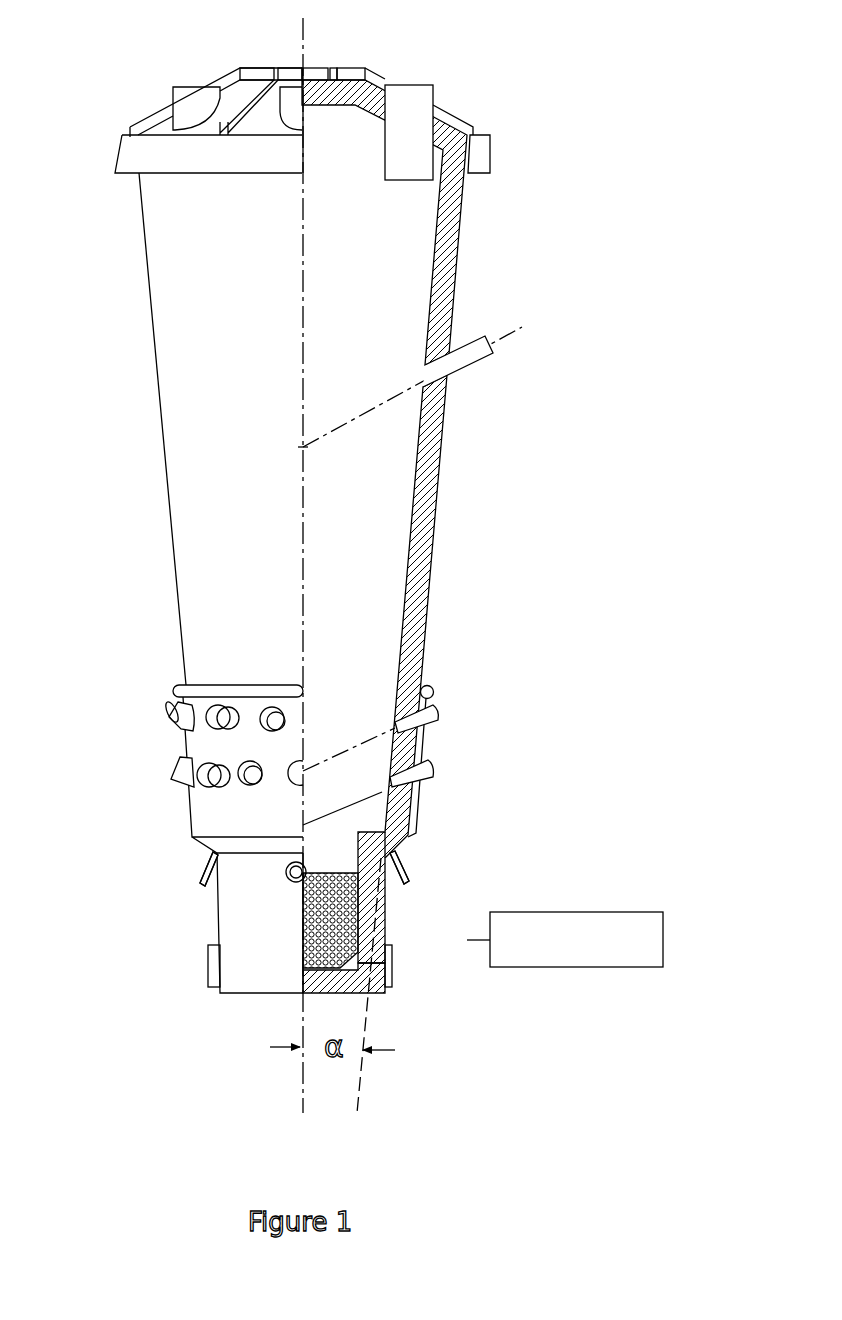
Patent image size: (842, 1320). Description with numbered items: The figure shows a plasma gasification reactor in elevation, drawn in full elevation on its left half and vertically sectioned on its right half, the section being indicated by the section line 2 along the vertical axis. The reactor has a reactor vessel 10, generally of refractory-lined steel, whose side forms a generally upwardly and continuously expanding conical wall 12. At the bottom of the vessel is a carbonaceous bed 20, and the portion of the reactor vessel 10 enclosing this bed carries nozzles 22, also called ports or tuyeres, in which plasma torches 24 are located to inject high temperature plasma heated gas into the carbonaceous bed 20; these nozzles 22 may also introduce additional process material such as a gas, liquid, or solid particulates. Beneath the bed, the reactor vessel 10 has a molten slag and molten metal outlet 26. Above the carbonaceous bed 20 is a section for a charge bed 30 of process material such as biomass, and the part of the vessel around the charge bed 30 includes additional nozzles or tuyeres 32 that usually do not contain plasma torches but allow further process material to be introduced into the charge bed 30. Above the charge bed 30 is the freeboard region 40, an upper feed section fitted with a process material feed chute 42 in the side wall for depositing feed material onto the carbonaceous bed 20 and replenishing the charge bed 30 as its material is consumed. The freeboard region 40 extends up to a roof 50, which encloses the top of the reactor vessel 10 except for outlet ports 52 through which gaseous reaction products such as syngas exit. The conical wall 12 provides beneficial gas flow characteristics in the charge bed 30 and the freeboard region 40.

The section line 2- 2 is at (298, 414).
The reactor vessel 10 is at (200, 324).
The conical wall 12 is at (453, 302).
The carbonaceous bed 20 is at (385, 928).
The nozzles 22 is at (198, 880).
The plasma torches 24 is at (203, 866).
The molten slag and molten metal outlet 26 is at (392, 967).
The charge bed 30 is at (353, 708).
The nozzles or tuyeres 32 is at (172, 725).
The freeboard region 40 is at (372, 262).
The process material feed chute 42 is at (488, 358).
The roof 50 is at (372, 90).
The outlet ports 52 is at (197, 85).